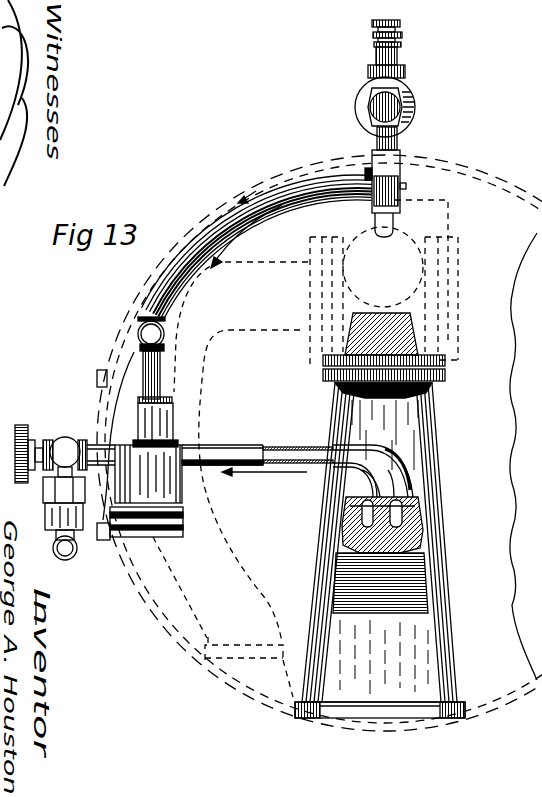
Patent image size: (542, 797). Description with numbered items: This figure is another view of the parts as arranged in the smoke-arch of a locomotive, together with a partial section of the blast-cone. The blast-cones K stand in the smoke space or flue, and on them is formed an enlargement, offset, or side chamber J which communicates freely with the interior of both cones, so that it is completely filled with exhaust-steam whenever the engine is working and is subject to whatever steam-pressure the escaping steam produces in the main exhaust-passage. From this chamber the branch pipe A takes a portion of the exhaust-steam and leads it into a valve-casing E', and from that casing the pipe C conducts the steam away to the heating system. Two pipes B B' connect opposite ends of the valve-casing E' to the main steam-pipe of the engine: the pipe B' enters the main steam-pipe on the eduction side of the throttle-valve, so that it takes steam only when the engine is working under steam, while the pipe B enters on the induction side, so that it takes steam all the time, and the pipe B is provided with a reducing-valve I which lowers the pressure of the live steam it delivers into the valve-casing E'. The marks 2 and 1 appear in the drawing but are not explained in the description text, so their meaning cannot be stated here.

The pipe B' is at (319, 443).
The pipe B is at (257, 247).
The reducing-valve I is at (433, 128).
The blast-cones K is at (436, 472).
The enlargement, offset, or side chamber J is at (312, 552).
The section line 2- 2 is at (318, 508).
The branch pipe A is at (210, 450).
The valve-casing E' is at (178, 428).
The pipe C is at (37, 493).
The valve ball and ring 1 is at (63, 436).